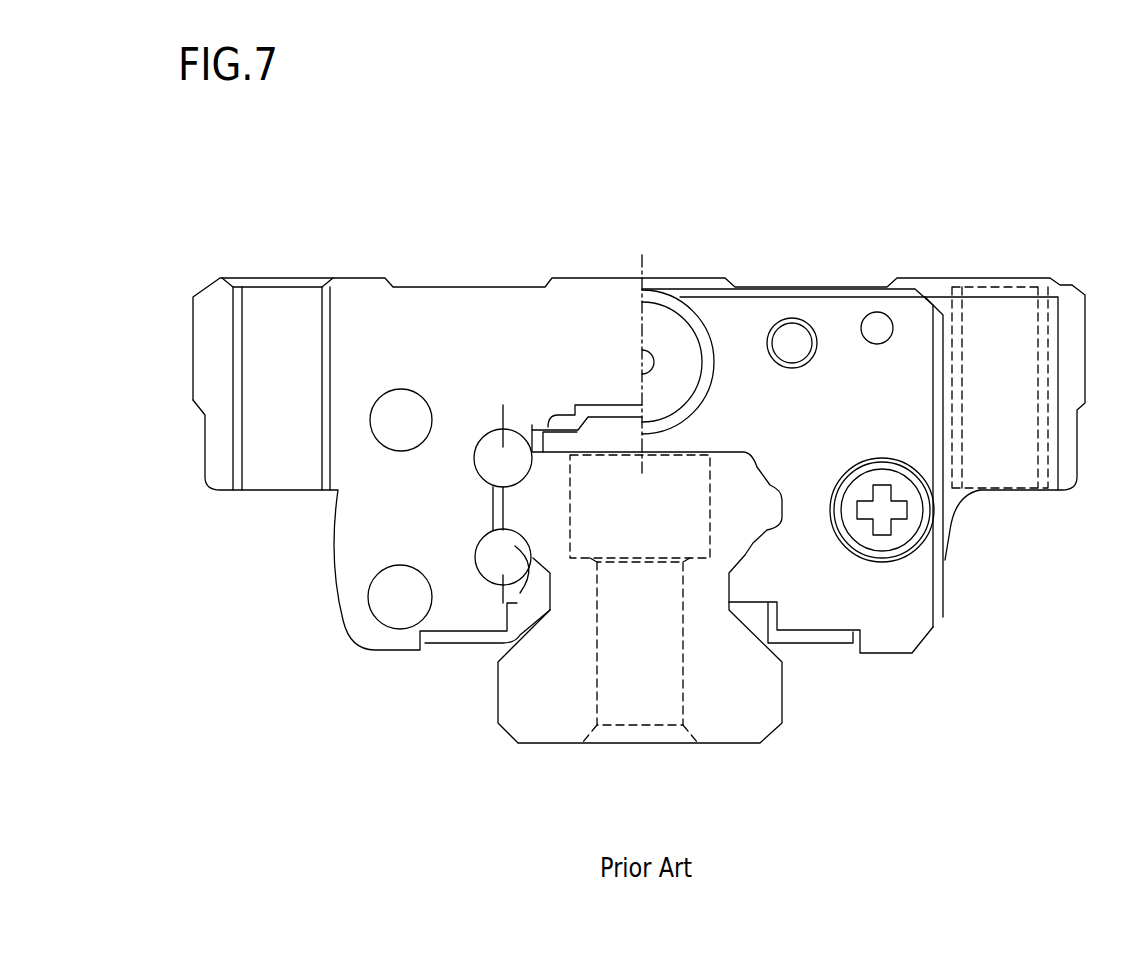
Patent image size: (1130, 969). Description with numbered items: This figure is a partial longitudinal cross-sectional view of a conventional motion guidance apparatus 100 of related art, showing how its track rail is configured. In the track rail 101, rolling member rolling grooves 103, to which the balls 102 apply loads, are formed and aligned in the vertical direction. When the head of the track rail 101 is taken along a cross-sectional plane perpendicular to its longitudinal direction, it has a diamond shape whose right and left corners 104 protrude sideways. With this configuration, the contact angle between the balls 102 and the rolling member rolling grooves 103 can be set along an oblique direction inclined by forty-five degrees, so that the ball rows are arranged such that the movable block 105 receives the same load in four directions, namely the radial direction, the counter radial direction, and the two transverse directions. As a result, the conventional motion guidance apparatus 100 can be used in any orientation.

The motion guidance apparatus 100 is at (978, 148).
The track rail 101 is at (782, 703).
The balls 102 is at (492, 450).
The rolling member rolling grooves 103 is at (490, 482).
The right and left corners 104 is at (510, 512).
The movable block 105 is at (370, 278).